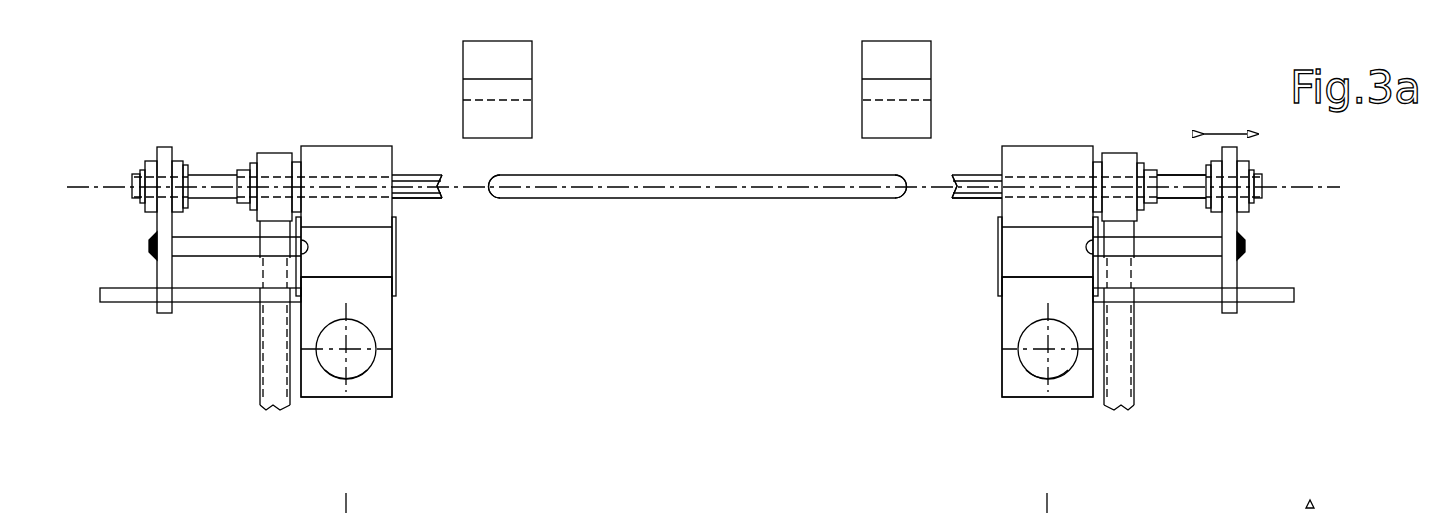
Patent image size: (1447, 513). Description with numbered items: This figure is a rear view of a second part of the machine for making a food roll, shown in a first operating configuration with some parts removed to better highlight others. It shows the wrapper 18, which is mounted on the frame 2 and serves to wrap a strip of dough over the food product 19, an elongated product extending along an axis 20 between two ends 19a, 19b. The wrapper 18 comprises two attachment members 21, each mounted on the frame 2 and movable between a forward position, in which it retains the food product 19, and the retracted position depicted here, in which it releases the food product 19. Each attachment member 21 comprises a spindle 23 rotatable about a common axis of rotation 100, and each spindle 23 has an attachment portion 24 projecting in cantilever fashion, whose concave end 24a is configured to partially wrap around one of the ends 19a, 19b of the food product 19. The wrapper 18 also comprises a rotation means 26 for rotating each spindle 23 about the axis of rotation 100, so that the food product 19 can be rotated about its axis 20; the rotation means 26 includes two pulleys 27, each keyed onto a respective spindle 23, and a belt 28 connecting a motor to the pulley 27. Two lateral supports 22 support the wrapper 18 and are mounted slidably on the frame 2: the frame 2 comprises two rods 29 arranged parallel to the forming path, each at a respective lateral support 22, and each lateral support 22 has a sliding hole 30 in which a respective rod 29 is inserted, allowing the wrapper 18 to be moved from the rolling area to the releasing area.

The frame 2 is at (332, 367).
The wrapper 18 is at (830, 503).
The food product 19 is at (733, 180).
The first end of the food product 19a is at (497, 200).
The second end of the food product 19b is at (898, 200).
The axis of the food product 20 is at (620, 180).
The attachment member 21 is at (396, 133).
The lateral support 22 is at (377, 323).
The spindle 23 is at (408, 200).
The attachment portion 24 is at (428, 178).
The concave end 24a is at (442, 198).
The rotation means 26 is at (148, 134).
The pulley 27 is at (270, 158).
The belt 28 is at (270, 353).
The rod 29 is at (352, 368).
The sliding hole 30 is at (370, 374).
The axis of rotation 100 is at (1176, 185).